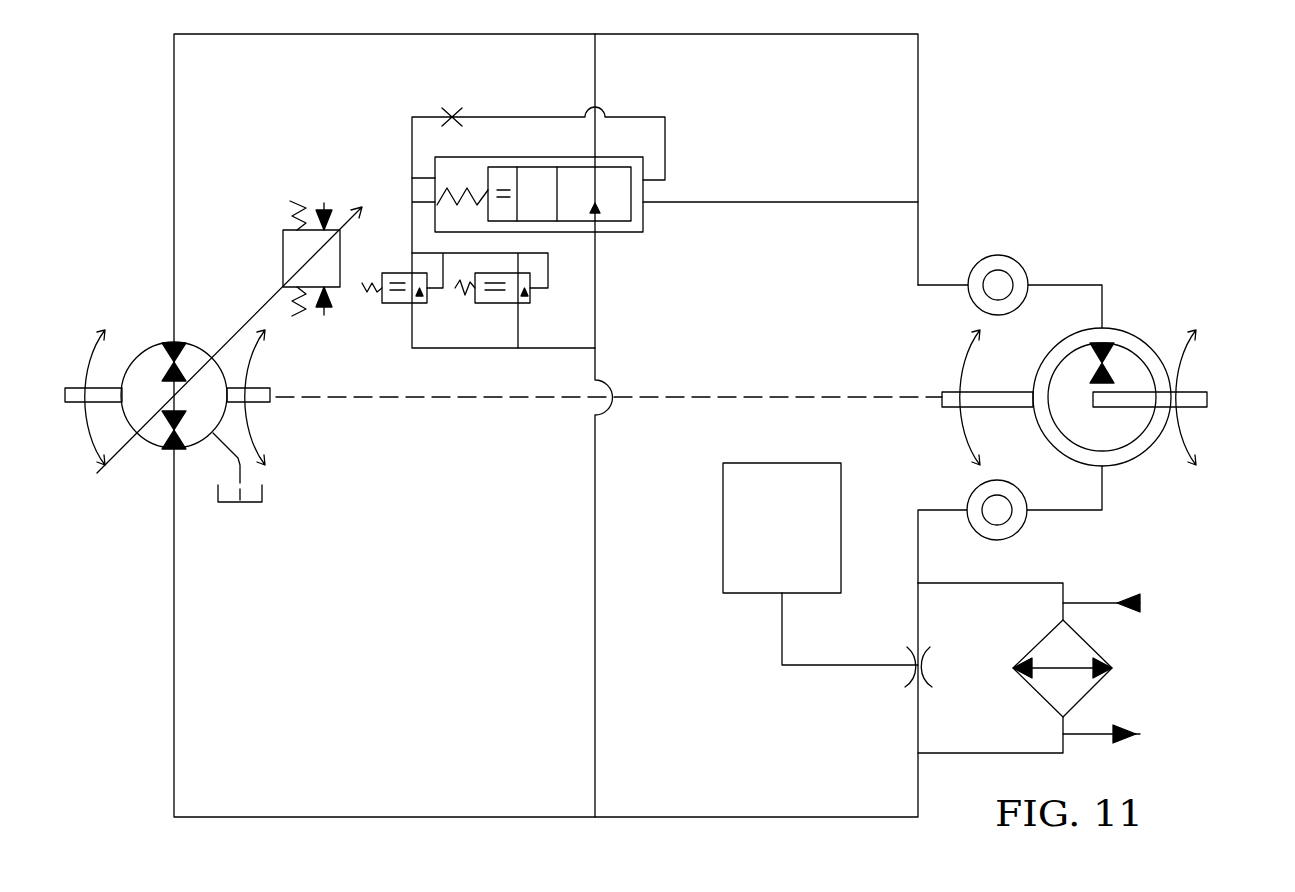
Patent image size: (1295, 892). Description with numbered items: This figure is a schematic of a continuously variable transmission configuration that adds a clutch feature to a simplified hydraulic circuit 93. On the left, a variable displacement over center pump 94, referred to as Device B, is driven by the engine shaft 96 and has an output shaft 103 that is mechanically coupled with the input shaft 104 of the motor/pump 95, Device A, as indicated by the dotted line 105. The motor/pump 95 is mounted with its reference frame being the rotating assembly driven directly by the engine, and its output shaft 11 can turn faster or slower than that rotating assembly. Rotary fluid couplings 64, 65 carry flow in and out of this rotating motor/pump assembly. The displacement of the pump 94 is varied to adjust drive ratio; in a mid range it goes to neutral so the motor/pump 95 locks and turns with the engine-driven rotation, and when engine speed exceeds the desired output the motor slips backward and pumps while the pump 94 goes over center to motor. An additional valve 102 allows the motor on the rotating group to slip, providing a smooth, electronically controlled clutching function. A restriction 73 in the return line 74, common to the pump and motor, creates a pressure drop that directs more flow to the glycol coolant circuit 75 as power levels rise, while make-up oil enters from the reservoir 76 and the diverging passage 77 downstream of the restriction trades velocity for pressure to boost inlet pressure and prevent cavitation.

The output shaft 11 is at (1190, 390).
The rotary fluid coupling 64 is at (1021, 263).
The rotary fluid coupling 65 is at (1015, 530).
The restriction 73 is at (910, 656).
The return line 74 is at (917, 528).
The glycol coolant circuit 75 is at (1090, 690).
The reservoir 76 is at (731, 558).
The diverging passage 77 is at (917, 722).
The simplified circuit 93 is at (921, 120).
The variable displacement over center pump 94 is at (150, 348).
The motor/pump 95 is at (1133, 335).
The engine shaft 96 is at (77, 402).
The additional valve 102 is at (560, 233).
The output shaft 103 is at (271, 393).
The input shaft 104 is at (1000, 390).
The dotted line 105 is at (808, 390).